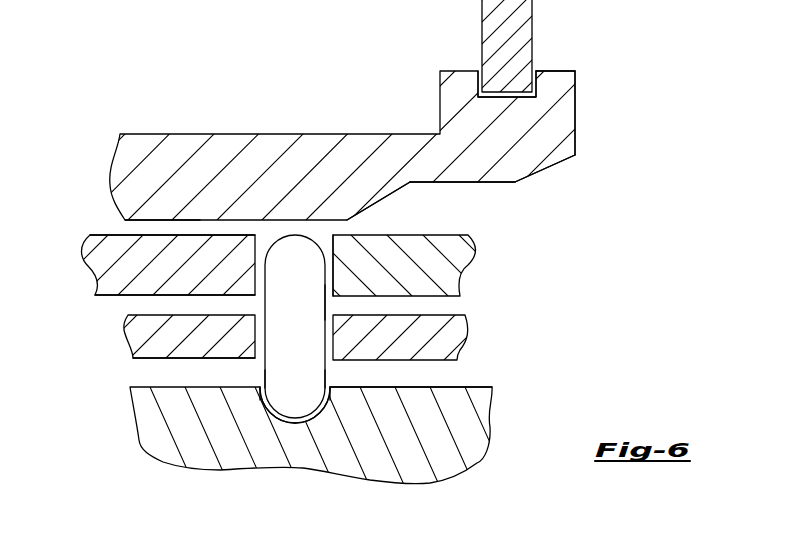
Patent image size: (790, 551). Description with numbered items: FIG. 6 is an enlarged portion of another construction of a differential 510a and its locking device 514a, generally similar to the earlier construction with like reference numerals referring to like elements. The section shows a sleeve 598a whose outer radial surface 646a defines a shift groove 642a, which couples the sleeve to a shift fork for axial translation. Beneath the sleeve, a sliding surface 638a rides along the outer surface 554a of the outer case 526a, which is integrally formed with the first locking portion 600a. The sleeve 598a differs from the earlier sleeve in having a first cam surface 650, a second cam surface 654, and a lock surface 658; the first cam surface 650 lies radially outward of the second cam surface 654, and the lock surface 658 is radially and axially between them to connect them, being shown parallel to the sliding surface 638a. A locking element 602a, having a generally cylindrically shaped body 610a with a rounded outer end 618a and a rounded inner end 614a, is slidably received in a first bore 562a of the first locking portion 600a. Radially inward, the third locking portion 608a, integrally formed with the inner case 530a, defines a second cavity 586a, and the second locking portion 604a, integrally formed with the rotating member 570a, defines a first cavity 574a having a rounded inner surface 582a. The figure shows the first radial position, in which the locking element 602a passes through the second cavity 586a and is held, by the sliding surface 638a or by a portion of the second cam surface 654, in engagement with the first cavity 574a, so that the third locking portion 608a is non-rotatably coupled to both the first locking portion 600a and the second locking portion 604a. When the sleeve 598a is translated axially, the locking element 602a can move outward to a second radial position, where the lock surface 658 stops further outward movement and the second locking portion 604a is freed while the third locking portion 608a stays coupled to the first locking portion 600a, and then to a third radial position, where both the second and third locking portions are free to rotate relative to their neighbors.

The differential 510a is at (612, 122).
The locking device 514a is at (435, 66).
The outer radial surface of the sleeve 646a is at (562, 70).
The sleeve 598a is at (577, 70).
The shift groove 642a is at (483, 94).
The second cam surface 654 is at (400, 190).
The lock surface 658 is at (443, 182).
The first cam surface 650 is at (565, 162).
The sliding surface 638a is at (161, 217).
The outer end of locking element 618a is at (281, 236).
The outer surface of outer case 554a is at (90, 235).
The first bore 562a is at (255, 280).
The first locking portion 600a is at (162, 280).
The second cavities 586a is at (255, 345).
The third locking portion 608a is at (190, 353).
The outer case 526a is at (460, 253).
The locking elements 602a is at (325, 307).
The inner case 530a is at (455, 332).
The second locking portion 604a is at (373, 393).
The rotating member 570a is at (480, 395).
The cylindrically shaped body 610a is at (275, 387).
The inner end of locking element 614a is at (331, 402).
The rounded inner surface of first cavity 582a is at (267, 410).
The first cavities 574a is at (333, 402).